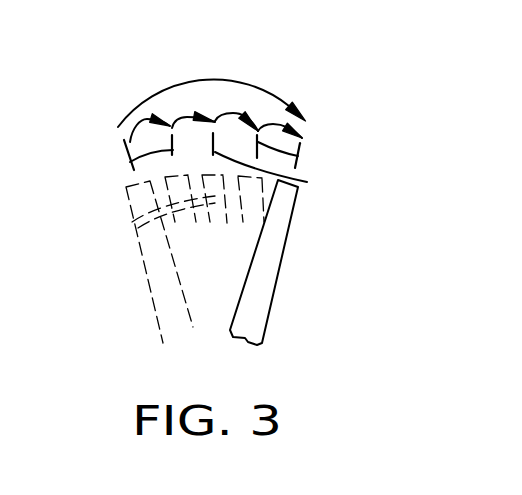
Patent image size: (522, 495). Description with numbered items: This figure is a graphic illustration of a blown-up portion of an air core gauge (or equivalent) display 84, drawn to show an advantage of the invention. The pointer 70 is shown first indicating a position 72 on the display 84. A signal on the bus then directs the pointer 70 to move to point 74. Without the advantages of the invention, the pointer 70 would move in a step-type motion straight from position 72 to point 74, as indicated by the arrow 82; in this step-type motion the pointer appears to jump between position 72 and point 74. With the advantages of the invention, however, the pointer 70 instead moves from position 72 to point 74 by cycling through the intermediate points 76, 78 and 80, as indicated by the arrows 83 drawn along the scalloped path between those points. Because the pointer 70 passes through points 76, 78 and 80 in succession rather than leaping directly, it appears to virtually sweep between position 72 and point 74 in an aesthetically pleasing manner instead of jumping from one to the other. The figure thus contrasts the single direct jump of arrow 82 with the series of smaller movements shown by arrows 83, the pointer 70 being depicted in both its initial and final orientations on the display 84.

The pointer 70 is at (138, 228).
The position 72 is at (127, 151).
The point 74 is at (298, 158).
The point 76 is at (128, 164).
The point 78 is at (276, 178).
The point 80 is at (298, 156).
The arrow 82 is at (281, 101).
The arrows 83 is at (182, 120).
The display 84 is at (371, 233).